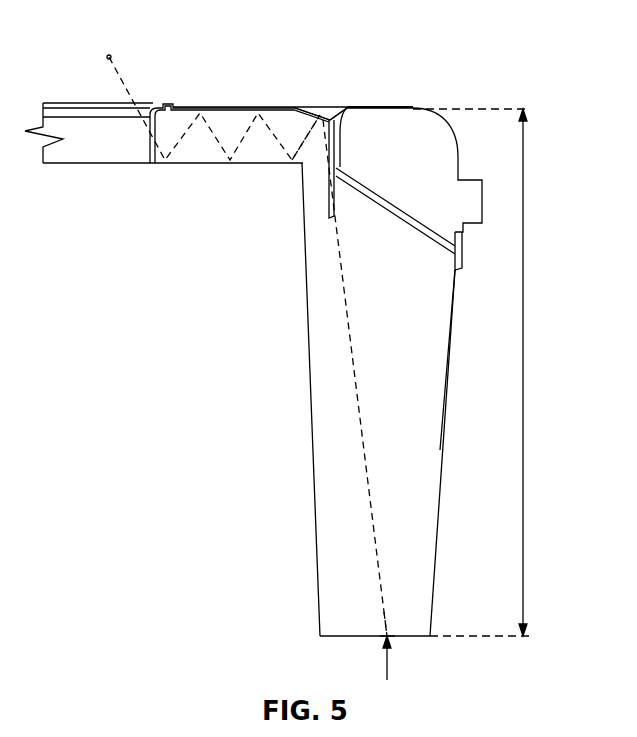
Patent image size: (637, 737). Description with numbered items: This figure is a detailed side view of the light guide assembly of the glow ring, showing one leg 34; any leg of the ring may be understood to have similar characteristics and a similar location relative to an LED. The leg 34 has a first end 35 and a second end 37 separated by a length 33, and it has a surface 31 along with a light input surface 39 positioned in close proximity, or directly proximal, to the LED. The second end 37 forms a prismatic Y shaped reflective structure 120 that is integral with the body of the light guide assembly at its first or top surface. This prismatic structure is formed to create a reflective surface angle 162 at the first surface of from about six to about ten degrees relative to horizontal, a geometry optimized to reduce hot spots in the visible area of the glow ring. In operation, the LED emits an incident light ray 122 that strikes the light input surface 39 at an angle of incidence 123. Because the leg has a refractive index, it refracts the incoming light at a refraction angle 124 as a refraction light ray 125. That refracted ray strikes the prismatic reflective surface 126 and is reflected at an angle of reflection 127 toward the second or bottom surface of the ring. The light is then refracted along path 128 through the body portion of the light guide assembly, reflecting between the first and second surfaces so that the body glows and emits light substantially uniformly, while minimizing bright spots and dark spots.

The surface 31 is at (316, 557).
The length 33 is at (524, 372).
The leg 34 is at (552, 517).
The first end 35 is at (308, 628).
The second end 37 is at (420, 107).
The light input surface 39 is at (345, 638).
The prismatic Y shaped reflective structure 120 is at (372, 109).
The incident light ray 122 is at (390, 666).
The angle of incidence 123 is at (390, 638).
The refraction angle 124 is at (388, 634).
The refraction light ray 125 is at (360, 437).
The prismatic reflective surface 126 is at (327, 117).
The angle of reflection 127 is at (305, 150).
The path 128 is at (212, 135).
The reflective surface angle 162 is at (303, 111).